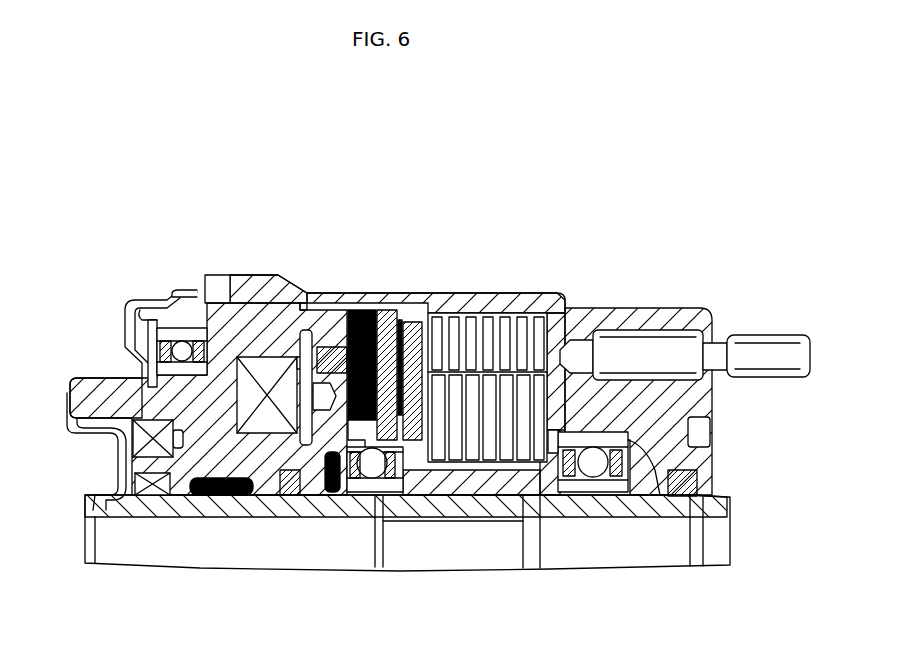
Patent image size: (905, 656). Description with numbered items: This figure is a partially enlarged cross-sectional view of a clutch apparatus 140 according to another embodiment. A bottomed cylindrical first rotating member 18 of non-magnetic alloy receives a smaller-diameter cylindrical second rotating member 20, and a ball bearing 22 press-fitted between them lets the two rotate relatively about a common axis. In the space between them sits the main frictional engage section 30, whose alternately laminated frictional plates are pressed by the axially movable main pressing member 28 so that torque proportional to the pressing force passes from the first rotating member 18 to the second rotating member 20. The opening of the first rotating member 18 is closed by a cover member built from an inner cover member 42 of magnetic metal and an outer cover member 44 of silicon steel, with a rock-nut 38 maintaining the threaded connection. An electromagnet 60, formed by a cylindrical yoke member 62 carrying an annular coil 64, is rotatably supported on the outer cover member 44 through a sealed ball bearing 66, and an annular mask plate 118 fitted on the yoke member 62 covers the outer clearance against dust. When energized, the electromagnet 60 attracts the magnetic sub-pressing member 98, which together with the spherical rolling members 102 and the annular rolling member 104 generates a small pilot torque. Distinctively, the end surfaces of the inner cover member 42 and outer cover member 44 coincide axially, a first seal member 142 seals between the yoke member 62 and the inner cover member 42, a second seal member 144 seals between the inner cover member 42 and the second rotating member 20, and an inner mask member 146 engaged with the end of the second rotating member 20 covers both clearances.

The clutch apparatus 140 is at (683, 195).
The first rotating member 18 is at (641, 312).
The second rotating member 20 is at (722, 508).
The ball bearing 22 is at (617, 485).
The main pressing member 28 is at (418, 308).
The main frictional engage section 30 is at (494, 290).
The rock-nut 38 is at (216, 290).
The inner cover member 42 is at (192, 465).
The outer cover member 44 is at (255, 298).
The electromagnet 60 is at (97, 355).
The yoke member 62 is at (88, 385).
The annular coil 64 is at (270, 425).
The sealed ball bearing 66 is at (181, 296).
The sub-pressing member 98 is at (386, 310).
The spherical rolling members 102 is at (380, 478).
The annular rolling member 104 is at (372, 470).
The annular mask plate 118 is at (128, 286).
The first seal member 142 is at (126, 500).
The second seal member 144 is at (149, 498).
The inner mask member 146 is at (105, 432).